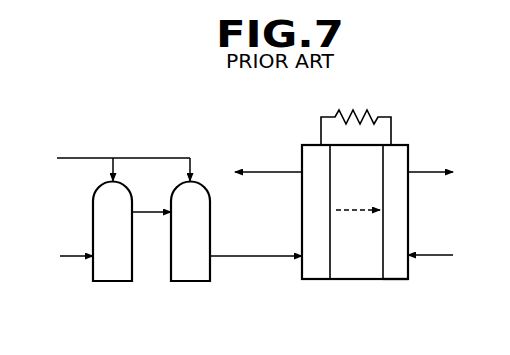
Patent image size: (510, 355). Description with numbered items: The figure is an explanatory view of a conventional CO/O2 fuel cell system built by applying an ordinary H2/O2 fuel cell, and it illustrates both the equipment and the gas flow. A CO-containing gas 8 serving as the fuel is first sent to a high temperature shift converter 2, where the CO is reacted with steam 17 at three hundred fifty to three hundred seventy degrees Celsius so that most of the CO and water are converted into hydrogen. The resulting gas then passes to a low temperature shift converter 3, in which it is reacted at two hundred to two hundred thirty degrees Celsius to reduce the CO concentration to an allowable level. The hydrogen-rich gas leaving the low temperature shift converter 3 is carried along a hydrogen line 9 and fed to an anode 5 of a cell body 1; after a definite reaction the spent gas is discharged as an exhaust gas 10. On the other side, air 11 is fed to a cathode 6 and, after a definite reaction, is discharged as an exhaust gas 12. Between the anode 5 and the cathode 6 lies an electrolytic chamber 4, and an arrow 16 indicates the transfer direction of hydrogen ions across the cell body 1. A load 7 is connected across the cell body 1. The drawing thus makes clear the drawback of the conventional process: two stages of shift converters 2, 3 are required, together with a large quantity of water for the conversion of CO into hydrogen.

The cell body 1 is at (345, 280).
The high temperature shift converter 2 is at (117, 273).
The low temperature shift converter 3 is at (193, 273).
The electrolytic chamber 4 is at (370, 274).
The anode 5 is at (315, 274).
The cathode 6 is at (398, 274).
The load 7 is at (335, 117).
The CO-containing gas 8 is at (66, 258).
The hydrogen supply line 9 is at (266, 258).
The exhaust gas 10 is at (265, 172).
The air 11 is at (437, 257).
The exhaust gas 12 is at (430, 172).
The transfer direction of hydrogen ion 16 is at (353, 210).
The steam 17 is at (133, 158).